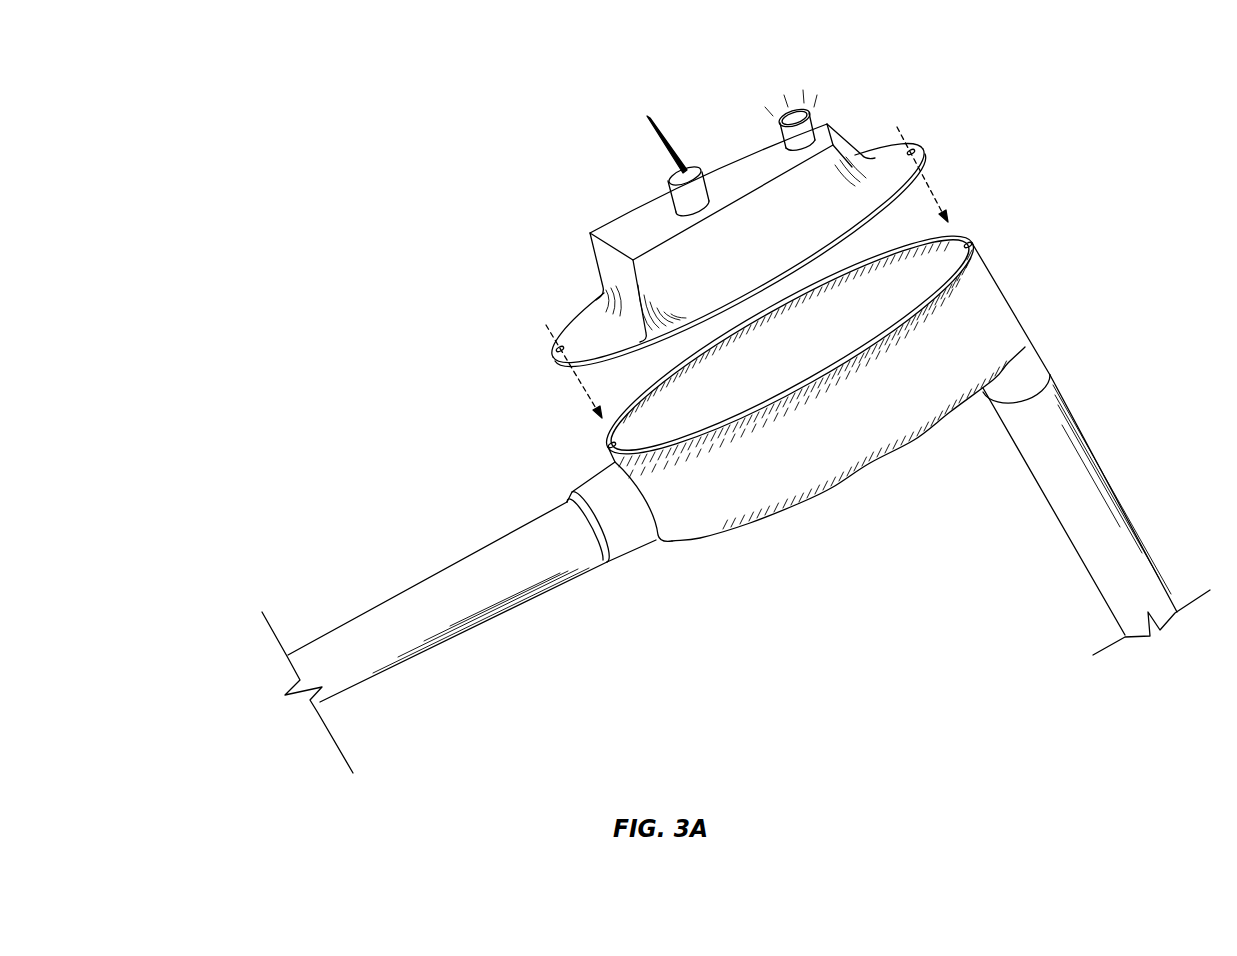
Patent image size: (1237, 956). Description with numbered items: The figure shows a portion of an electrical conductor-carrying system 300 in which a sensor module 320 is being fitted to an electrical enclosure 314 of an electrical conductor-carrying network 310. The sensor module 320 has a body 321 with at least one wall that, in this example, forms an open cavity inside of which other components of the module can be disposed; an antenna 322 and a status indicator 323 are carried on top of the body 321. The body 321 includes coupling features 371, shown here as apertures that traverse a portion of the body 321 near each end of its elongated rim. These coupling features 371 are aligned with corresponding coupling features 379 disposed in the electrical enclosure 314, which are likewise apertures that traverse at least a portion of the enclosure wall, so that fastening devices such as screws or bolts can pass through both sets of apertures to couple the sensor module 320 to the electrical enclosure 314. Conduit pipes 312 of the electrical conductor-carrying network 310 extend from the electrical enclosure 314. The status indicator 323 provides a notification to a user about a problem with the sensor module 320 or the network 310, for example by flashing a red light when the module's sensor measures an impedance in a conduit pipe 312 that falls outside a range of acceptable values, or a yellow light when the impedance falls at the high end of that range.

The electrical conductor-carrying system 300 is at (318, 104).
The electrical conductor-carrying network 310 is at (782, 604).
The conduit pipe 312 is at (420, 593).
The electrical enclosure 314 is at (1013, 304).
The sensor module 320 is at (541, 349).
The body 321 is at (823, 200).
The antenna 322 is at (656, 146).
The status indicator 323 is at (824, 119).
The coupling features 371 is at (556, 352).
The corresponding coupling features 379 is at (610, 444).